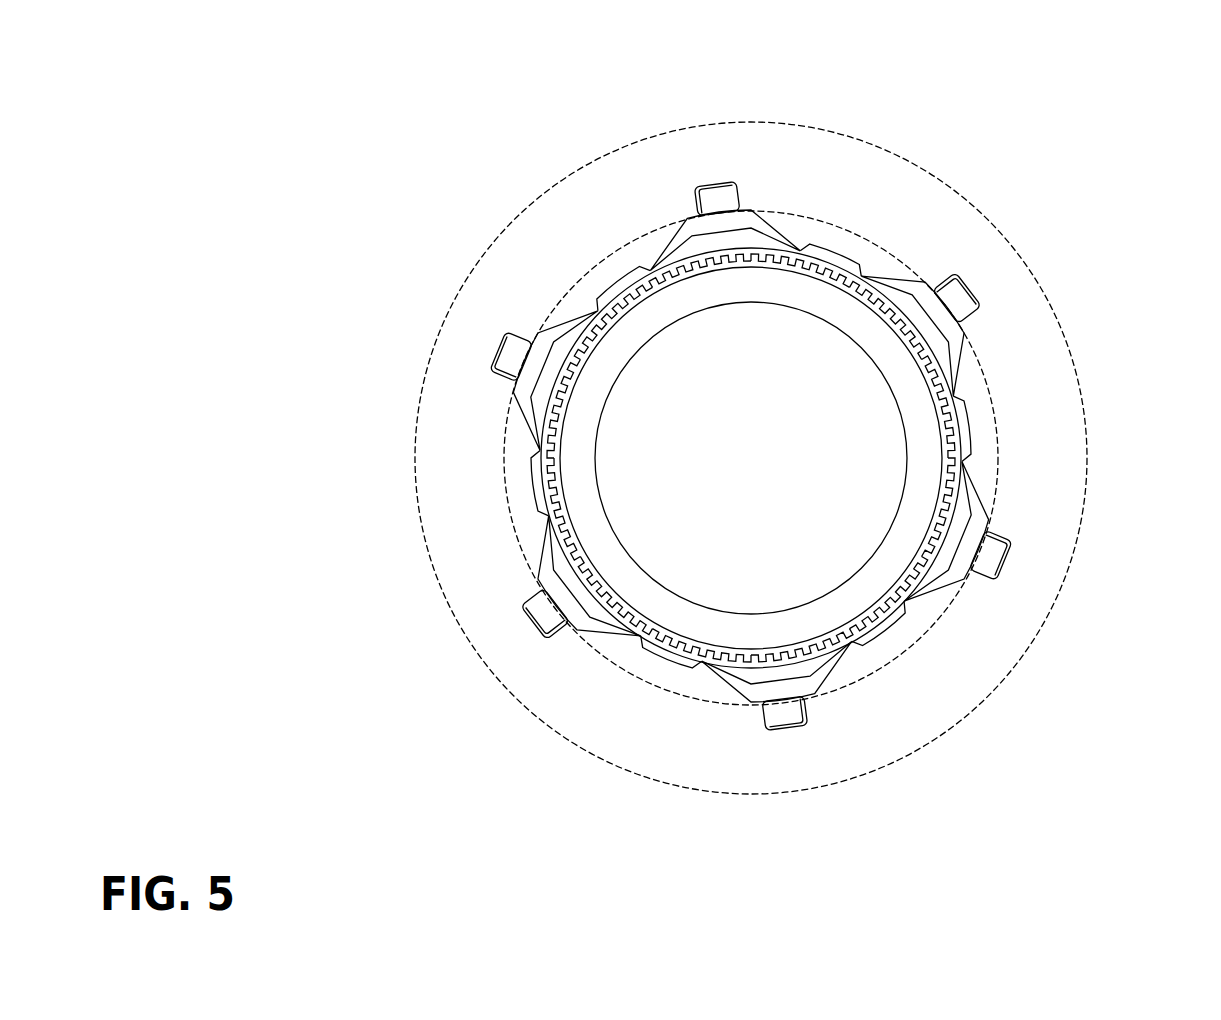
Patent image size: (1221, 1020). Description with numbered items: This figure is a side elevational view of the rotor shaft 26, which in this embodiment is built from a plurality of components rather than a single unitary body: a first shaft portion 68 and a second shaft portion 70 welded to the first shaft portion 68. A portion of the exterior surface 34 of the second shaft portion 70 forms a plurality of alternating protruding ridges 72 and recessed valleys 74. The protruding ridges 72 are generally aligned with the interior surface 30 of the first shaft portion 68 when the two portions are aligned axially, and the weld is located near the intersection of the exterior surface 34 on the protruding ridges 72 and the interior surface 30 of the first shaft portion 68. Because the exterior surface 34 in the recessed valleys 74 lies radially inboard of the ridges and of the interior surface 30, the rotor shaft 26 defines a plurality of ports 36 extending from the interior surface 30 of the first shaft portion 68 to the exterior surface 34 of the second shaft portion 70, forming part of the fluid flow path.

The rotor shaft 26 is at (965, 191).
The first shaft portion 68 is at (1000, 224).
The second shaft portion 70 is at (912, 398).
The interior surface 30 is at (882, 237).
The exterior surface 34 is at (872, 258).
The port 36 is at (830, 228).
The protruding ridges 72 is at (720, 223).
The recessed valleys 74 is at (830, 240).